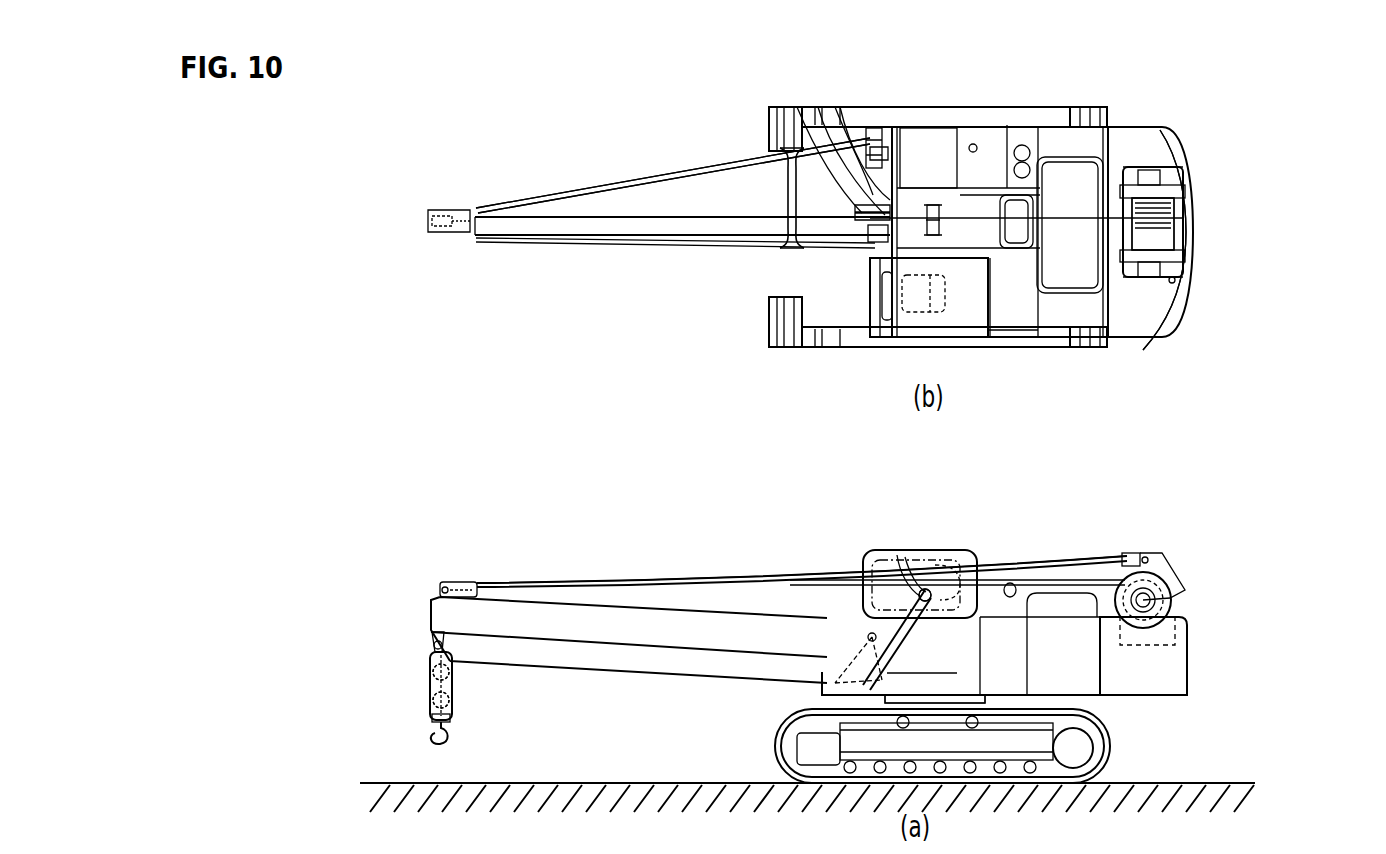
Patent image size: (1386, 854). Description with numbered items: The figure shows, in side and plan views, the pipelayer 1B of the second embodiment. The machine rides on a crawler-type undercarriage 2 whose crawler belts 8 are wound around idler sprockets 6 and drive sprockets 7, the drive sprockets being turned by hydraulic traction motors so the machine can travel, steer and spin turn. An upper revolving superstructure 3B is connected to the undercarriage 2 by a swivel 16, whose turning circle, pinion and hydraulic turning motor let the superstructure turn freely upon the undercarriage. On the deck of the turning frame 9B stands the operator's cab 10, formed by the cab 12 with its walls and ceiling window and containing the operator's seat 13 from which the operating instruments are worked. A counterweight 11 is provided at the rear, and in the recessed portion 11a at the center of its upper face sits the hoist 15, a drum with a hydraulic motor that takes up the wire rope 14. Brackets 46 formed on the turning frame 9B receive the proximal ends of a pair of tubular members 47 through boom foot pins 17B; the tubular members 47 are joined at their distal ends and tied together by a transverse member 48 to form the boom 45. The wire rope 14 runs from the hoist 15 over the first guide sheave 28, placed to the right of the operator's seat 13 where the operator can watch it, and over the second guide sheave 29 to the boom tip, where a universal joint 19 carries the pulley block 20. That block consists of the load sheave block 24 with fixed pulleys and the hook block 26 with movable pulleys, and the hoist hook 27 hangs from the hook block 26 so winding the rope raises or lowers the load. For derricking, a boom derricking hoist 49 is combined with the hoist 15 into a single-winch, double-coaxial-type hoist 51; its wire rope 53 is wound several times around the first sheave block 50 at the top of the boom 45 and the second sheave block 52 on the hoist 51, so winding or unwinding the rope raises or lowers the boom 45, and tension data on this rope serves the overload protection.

The pipelayer 1B is at (1253, 132).
The crawler-type undercarriage 2 is at (1080, 107).
The upper revolving superstructure 3B is at (1185, 325).
The idler sprocket 6 is at (772, 785).
The drive sprocket 7 is at (1080, 748).
The crawler belt 8 is at (1113, 115).
The turning frame 9B is at (876, 145).
The operator's cab 10 is at (880, 548).
The counterweight 11 is at (1187, 155).
The recessed portion 11a is at (1172, 284).
The cab 12 is at (945, 337).
The operator's seat 13 is at (905, 318).
The wire rope 14 is at (637, 683).
The hoist 15 is at (1188, 188).
The swivel 16 is at (835, 700).
The boom foot pin 17B is at (882, 150).
The universal joint 19 is at (428, 645).
The pulley block 20 is at (440, 210).
The load sheave block 24 is at (460, 680).
The hook block 26 is at (455, 712).
The hoist hook 27 is at (430, 738).
The first guide sheave 28 is at (935, 205).
The second guide sheave 29 is at (810, 130).
The boom 45 is at (595, 245).
The bracket 46 is at (874, 128).
The tubular member 47 is at (692, 170).
The transverse member 48 is at (790, 180).
The boom derricking hoist 49 is at (1188, 258).
The first sheave block 50 is at (455, 582).
The single-winch and double-coaxial-type hoist 51 is at (1278, 185).
The second sheave block 52 is at (1130, 553).
The wire rope 53 is at (760, 572).